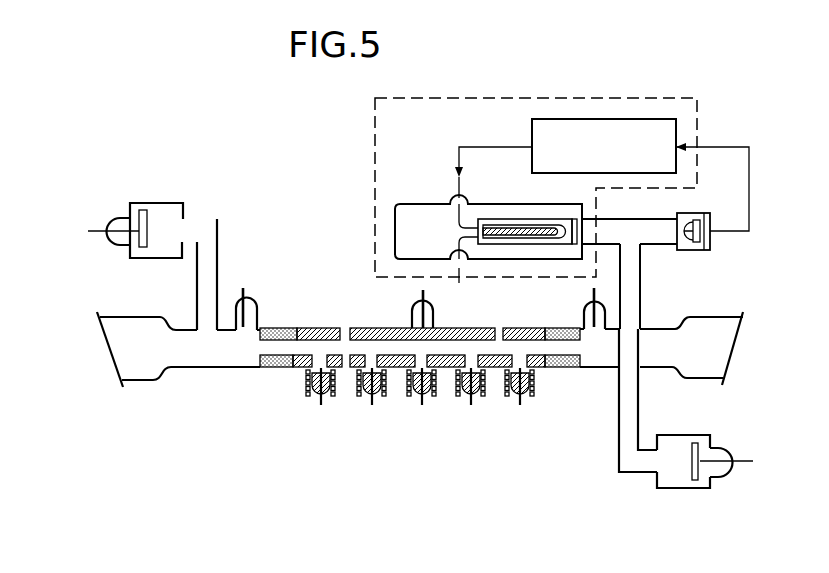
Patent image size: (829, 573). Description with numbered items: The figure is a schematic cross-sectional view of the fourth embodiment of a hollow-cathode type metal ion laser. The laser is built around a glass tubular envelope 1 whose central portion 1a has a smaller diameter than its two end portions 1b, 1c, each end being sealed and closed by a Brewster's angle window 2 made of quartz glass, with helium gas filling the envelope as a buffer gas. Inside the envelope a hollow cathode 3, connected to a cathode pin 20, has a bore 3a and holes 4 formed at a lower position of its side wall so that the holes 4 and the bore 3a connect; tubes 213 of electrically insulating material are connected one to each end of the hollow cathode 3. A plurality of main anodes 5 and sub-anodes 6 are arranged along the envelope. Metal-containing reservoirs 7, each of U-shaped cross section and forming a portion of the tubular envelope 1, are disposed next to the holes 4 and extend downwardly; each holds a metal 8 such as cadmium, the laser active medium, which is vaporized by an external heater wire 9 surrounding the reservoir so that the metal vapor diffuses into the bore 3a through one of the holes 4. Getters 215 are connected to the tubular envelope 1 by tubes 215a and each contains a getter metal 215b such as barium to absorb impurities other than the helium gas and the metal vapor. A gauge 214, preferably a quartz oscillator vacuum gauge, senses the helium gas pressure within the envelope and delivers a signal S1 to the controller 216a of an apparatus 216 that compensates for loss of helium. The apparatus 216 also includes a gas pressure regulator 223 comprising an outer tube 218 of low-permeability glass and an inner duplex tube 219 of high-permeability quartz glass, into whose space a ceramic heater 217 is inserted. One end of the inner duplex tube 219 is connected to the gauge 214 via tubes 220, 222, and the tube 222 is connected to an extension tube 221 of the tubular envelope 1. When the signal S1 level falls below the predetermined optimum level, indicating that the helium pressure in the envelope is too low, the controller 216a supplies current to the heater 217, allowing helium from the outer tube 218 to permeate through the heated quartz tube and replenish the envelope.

The tubular envelope 1 is at (360, 324).
The central portion 1a is at (434, 320).
The end portion 1b is at (152, 381).
The end portion 1c is at (704, 317).
The Brewster's angle window 2 is at (111, 363).
The hollow cathode 3 is at (518, 328).
The bore 3a is at (469, 347).
The holes 4 is at (303, 368).
The main anodes 5 is at (321, 406).
The sub-anodes 6 is at (248, 296).
The metal-containing reservoirs 7 is at (379, 393).
The metal 8 is at (336, 392).
The external heater wire 9 is at (306, 391).
The cathode pin 20 is at (448, 240).
The tubes 213 is at (268, 368).
The gauge 214 is at (703, 250).
The getters 215 is at (184, 204).
The tubes 215a is at (220, 243).
The getter metal 215b is at (143, 210).
The apparatus 216 is at (506, 98).
The controller 216a is at (619, 119).
The heater 217 is at (549, 229).
The outer tube 218 is at (486, 204).
The inner duplex tube 219 is at (516, 225).
The tube 220 is at (575, 246).
The extension tube 221 is at (641, 276).
The tube 222 is at (616, 219).
The gas pressure regulator 223 is at (427, 198).
The signal S1 is at (715, 147).